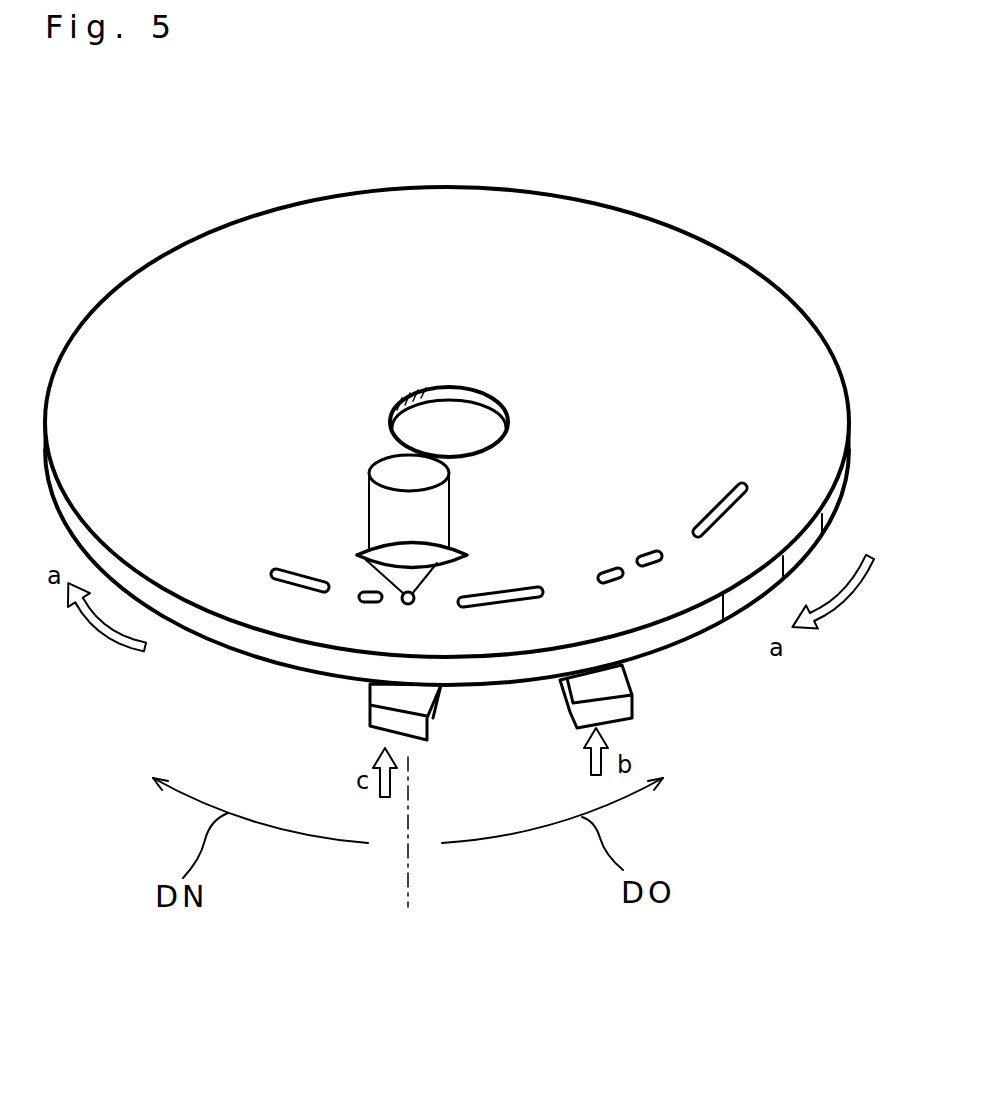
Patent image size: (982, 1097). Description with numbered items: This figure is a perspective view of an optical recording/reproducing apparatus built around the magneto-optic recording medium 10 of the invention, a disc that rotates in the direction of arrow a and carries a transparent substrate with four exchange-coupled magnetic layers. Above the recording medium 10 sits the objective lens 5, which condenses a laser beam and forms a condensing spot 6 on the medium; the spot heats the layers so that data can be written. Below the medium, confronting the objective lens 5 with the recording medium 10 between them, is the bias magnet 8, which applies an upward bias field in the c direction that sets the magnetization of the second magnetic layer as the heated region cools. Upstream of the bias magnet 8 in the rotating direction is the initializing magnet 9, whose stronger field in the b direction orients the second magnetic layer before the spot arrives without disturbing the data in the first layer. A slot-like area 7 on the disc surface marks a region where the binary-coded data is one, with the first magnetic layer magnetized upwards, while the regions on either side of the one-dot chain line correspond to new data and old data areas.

The objective lens 5 is at (370, 558).
The condensing spot 6 is at (404, 603).
The area where binary-coded data is "1" 7 is at (733, 502).
The bias magnet 8 is at (370, 717).
The initializing magnet 9 is at (633, 700).
The magneto-optic recording medium 10 is at (778, 288).